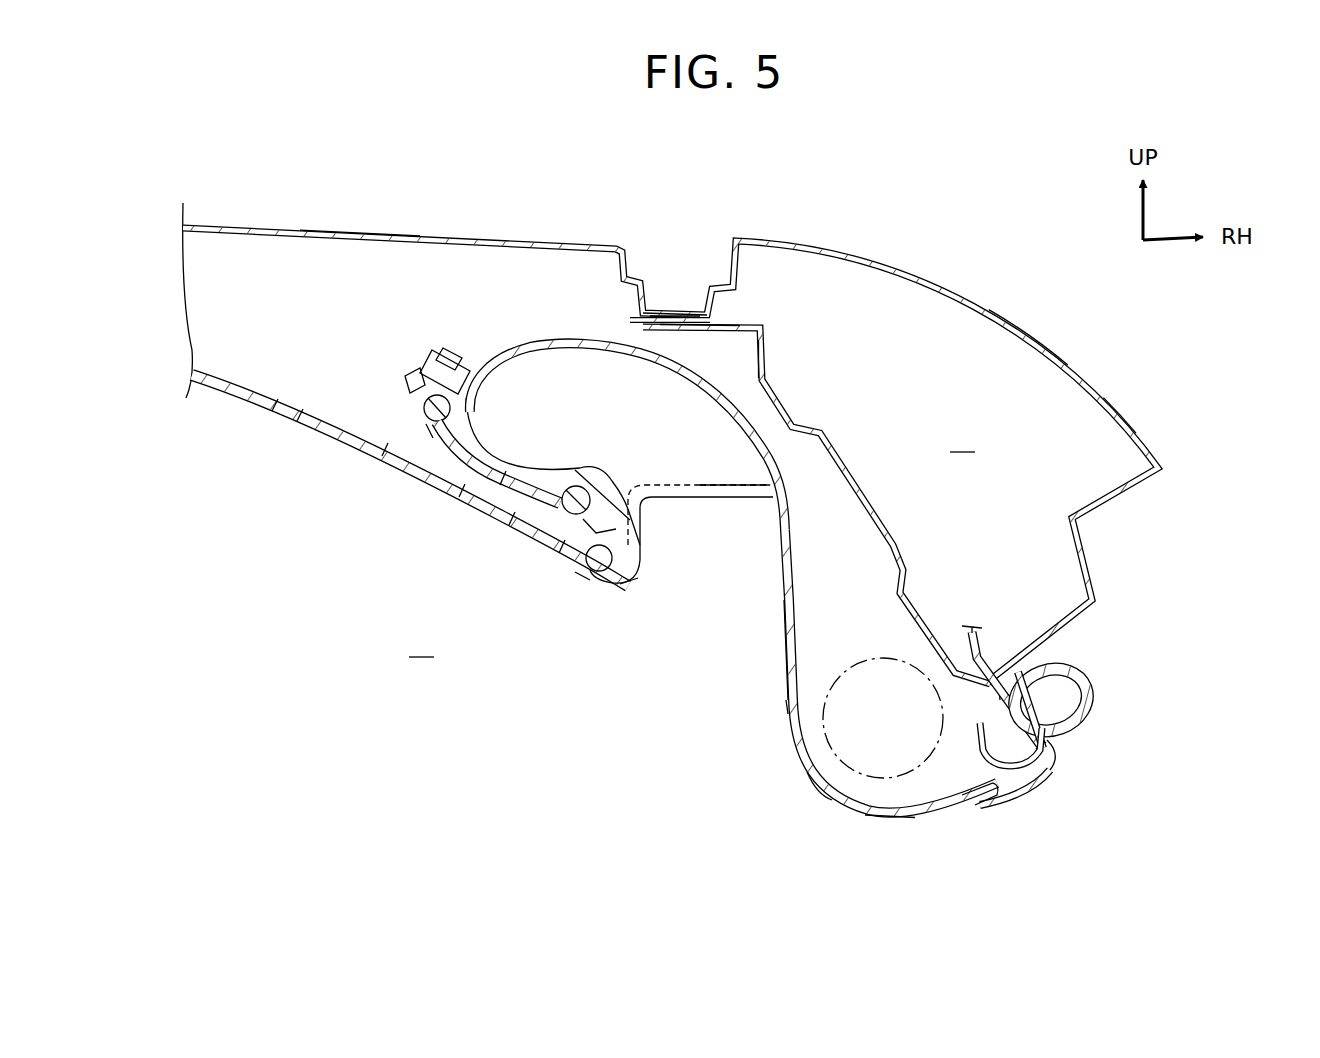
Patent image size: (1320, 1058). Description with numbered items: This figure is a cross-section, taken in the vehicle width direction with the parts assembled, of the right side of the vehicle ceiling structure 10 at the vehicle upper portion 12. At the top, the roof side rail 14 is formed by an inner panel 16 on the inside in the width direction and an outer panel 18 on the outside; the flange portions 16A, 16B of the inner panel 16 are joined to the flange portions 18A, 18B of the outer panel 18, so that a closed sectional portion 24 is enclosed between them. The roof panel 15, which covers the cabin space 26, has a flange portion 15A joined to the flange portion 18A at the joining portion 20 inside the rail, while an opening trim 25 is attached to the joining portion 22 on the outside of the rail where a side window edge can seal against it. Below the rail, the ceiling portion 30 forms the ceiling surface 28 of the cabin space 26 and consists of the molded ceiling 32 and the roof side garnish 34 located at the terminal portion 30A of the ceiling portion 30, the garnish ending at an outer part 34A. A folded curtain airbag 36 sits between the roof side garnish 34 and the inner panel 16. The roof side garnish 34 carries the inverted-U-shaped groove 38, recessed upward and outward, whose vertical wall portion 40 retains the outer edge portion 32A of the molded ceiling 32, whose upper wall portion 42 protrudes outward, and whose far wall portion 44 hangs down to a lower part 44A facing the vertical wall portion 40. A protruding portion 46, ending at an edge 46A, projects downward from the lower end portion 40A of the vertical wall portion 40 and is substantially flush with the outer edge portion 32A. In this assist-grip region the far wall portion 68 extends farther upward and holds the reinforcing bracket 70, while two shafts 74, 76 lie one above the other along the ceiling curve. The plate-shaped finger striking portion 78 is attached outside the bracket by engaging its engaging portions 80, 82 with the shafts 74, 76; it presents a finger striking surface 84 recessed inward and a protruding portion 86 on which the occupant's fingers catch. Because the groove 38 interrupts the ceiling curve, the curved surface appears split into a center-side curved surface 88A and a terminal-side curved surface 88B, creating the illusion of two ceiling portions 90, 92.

The vehicle ceiling structure 10 is at (668, 708).
The vehicle upper portion 12 is at (945, 265).
The roof side rail 14 is at (1060, 355).
The roof panel 15 is at (442, 232).
The flange portion 15A is at (661, 308).
The inner panel 16 is at (790, 413).
The flange portion 16A is at (680, 331).
The flange portion 16B is at (990, 700).
The outer panel 18 is at (1121, 421).
The flange portion 18A is at (669, 314).
The flange portion 18B is at (1025, 690).
The joining portion 20 is at (620, 318).
The joining portion 22 is at (995, 664).
The closed sectional portion 24 is at (962, 440).
The opening trim 25 is at (1100, 715).
The cabin space 26 is at (421, 645).
The ceiling surface 28 is at (340, 446).
The ceiling portion 30 is at (380, 478).
The terminal portion 30A is at (1020, 797).
The molded ceiling 32 is at (475, 505).
The outer edge portion 32A is at (582, 580).
The roof side garnish 34 is at (828, 806).
The end of bottom wall 34A is at (972, 805).
The airbag 36 is at (845, 695).
The groove 38 is at (720, 612).
The vertical wall portion 40 is at (645, 527).
The lower end portion 40A is at (613, 595).
The upper wall portion 42 is at (738, 498).
The far wall portion 44 is at (781, 575).
The bottom of outer wall 44A is at (887, 818).
The protruding portion 46 is at (633, 586).
The edge of lower wall 46A is at (641, 583).
The far wall portion 68 is at (762, 385).
The reinforcing bracket 70 is at (512, 494).
The shaft 74 is at (420, 413).
The shaft 76 is at (575, 514).
The finger striking portion 78 is at (497, 425).
The engaging portion 80 is at (425, 395).
The engaging portion 82 is at (615, 488).
The finger striking surface 84 is at (492, 453).
The protruding portion 86 is at (580, 480).
The curved surface 88A is at (302, 420).
The curved surface 88B is at (788, 707).
The ceiling portion 90 is at (275, 400).
The ceiling portion 92 is at (780, 652).